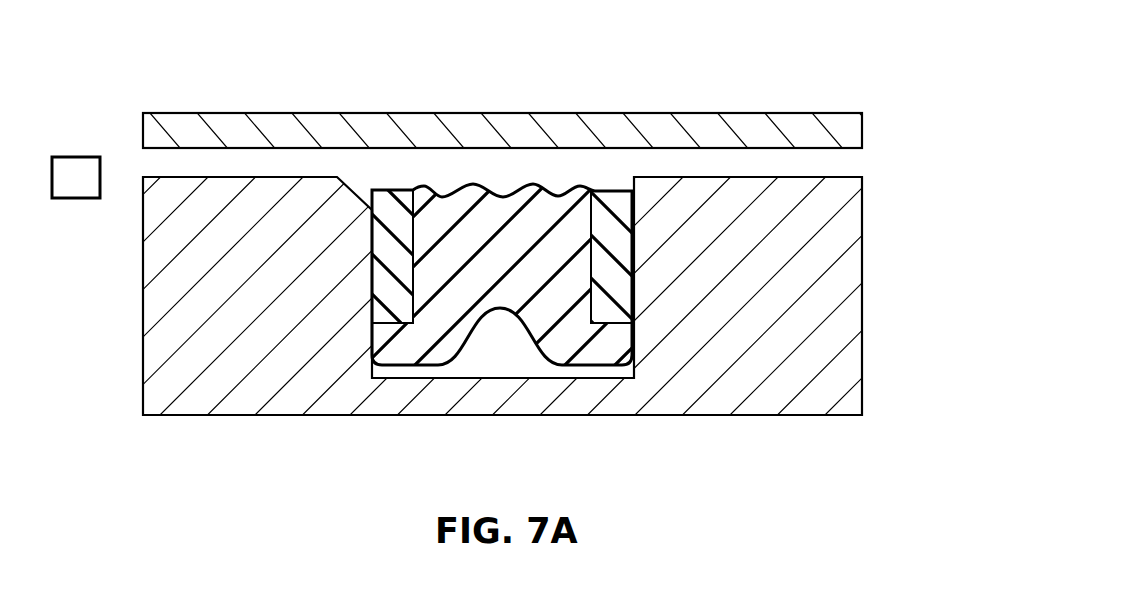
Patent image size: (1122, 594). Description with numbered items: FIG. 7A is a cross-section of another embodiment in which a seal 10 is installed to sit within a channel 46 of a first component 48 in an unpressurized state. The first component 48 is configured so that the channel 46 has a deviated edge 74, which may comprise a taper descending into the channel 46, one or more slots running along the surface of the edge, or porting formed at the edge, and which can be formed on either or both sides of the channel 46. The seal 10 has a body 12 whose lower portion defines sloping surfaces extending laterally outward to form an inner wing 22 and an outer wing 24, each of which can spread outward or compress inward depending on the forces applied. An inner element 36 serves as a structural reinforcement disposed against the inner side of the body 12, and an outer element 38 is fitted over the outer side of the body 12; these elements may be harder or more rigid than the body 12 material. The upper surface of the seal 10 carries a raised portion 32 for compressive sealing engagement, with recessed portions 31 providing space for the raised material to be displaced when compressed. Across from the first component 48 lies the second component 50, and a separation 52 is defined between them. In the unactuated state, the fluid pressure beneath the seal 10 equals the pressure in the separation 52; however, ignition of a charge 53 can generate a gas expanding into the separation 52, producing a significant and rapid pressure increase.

The seal 10 is at (555, 249).
The body 12 is at (503, 207).
The inner wing 22 is at (380, 327).
The outer wing 24 is at (617, 338).
The recessed portions 31 is at (450, 193).
The raised portion 32 is at (530, 185).
The inner element 36 is at (380, 237).
The outer element 38 is at (620, 244).
The channel 46 is at (487, 365).
The first component 48 is at (155, 398).
The second component 50 is at (150, 129).
The separation 52 is at (848, 165).
The charge 53 is at (125, 163).
The deviated edge 74 is at (353, 195).